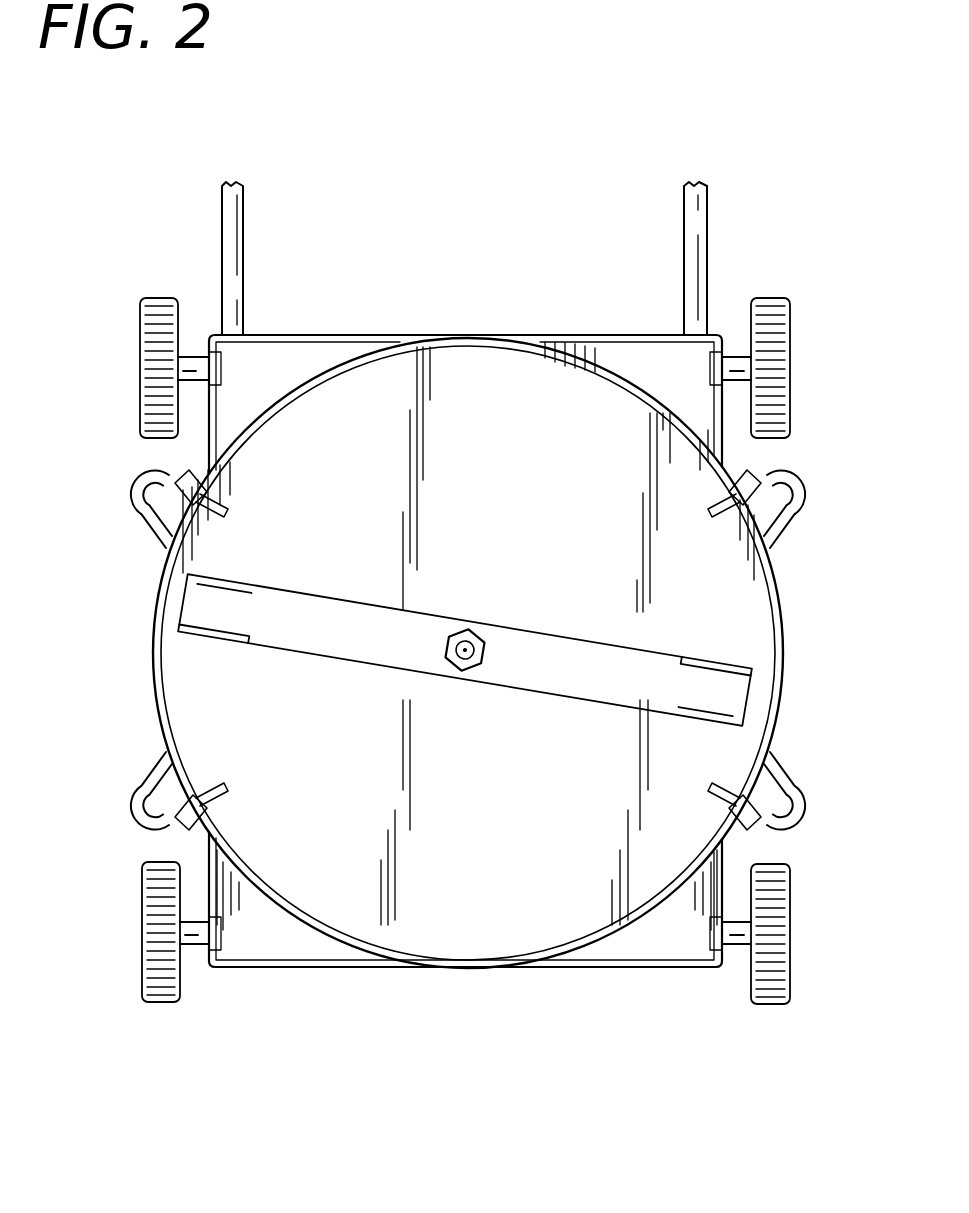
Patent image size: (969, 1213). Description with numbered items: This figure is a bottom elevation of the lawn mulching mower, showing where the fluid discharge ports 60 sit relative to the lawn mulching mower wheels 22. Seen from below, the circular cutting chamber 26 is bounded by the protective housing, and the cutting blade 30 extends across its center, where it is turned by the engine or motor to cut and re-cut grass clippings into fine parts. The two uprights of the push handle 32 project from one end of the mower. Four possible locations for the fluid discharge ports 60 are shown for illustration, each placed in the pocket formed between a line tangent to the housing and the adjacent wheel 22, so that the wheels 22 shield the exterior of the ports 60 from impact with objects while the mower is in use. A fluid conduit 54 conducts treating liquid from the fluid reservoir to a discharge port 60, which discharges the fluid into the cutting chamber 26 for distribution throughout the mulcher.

The lawn mulching mower wheels 22 is at (738, 950).
The cutting chamber 26 is at (680, 593).
The cutting blade 30 is at (745, 685).
The push handle 32 is at (243, 252).
The fluid conduit 54 is at (793, 490).
The fluid discharge port 60 is at (150, 508).